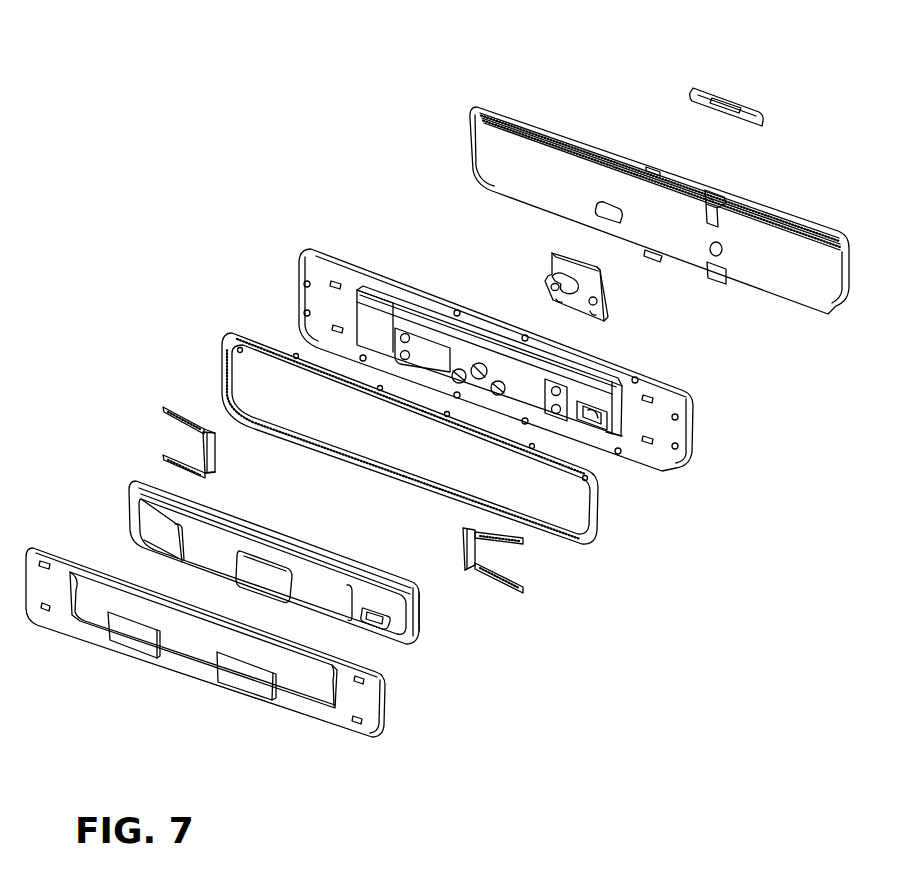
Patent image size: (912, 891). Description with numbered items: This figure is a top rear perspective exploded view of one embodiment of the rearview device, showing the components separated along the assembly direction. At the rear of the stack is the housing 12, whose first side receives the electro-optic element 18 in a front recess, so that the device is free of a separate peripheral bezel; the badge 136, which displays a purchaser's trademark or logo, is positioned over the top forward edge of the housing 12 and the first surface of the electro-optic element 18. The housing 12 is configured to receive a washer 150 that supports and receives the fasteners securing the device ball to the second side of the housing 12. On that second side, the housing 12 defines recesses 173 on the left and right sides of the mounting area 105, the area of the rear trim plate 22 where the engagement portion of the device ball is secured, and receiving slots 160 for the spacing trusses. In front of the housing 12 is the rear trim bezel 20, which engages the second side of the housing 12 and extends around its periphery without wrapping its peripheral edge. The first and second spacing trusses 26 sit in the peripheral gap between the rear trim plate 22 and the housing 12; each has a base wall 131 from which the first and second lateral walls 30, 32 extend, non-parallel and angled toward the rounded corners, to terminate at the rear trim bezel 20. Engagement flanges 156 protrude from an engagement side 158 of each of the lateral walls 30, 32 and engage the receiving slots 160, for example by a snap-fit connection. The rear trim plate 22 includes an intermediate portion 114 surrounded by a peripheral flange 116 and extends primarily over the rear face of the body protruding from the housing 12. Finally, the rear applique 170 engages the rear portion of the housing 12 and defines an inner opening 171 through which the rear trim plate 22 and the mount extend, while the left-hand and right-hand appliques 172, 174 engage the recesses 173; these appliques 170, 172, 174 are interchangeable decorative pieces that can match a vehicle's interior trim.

The housing 12 is at (496, 331).
The electro-optic element 18 is at (778, 213).
The rear trim bezel 20 is at (600, 517).
The rear trim plate 22 is at (282, 591).
The spacing truss 26 is at (217, 458).
The first lateral wall 30 is at (356, 488).
The second lateral wall 32 is at (190, 472).
The mounting area 105 is at (497, 372).
The intermediate portion 114 is at (327, 565).
The peripheral flange 116 is at (425, 643).
The base wall 131 is at (217, 442).
The badge 136 is at (730, 100).
The washer 150 is at (608, 298).
The engagement flange 156 is at (204, 437).
The engagement side 158 is at (170, 455).
The receiving slot 160 is at (334, 279).
The rear applique 170 is at (205, 665).
The inner opening 171 is at (194, 640).
The left-hand applique 172 is at (132, 643).
The recess 173 is at (427, 351).
The right-hand applique 174 is at (242, 682).